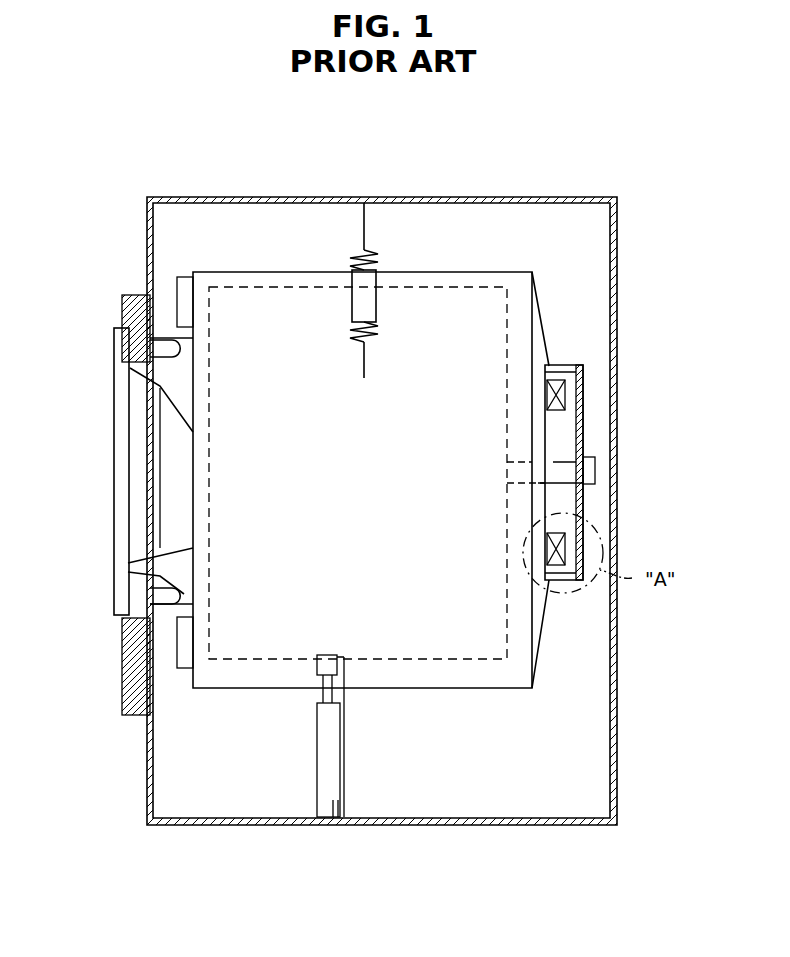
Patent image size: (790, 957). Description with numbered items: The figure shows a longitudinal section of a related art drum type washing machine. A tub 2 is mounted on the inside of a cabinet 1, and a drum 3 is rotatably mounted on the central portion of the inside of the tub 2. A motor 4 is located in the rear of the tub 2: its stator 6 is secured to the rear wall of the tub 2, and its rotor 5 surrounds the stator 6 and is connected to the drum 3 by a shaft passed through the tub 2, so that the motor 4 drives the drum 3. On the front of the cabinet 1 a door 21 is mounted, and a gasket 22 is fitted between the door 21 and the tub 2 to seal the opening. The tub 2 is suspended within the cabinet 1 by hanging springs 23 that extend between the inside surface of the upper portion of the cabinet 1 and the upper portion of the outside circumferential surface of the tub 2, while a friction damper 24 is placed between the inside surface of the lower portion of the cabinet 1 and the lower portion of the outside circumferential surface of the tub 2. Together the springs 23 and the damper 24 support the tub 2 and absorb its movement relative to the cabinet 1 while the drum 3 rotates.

The cabinet 1 is at (215, 197).
The tub 2 is at (466, 272).
The drum 3 is at (288, 287).
The motor 4 is at (565, 480).
The rotor 5 is at (580, 540).
The stator 6 is at (565, 392).
The door 21 is at (120, 481).
The gasket 22 is at (152, 612).
The hanging spring 23 is at (375, 270).
The friction damper 24 is at (346, 750).